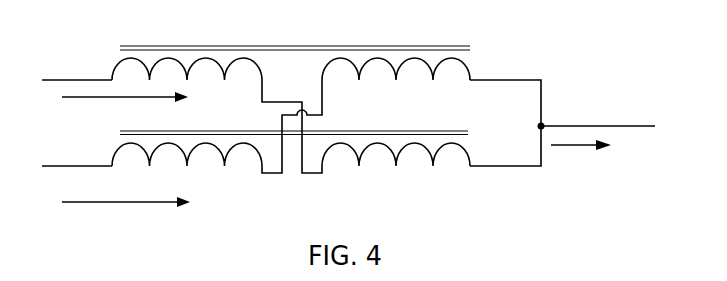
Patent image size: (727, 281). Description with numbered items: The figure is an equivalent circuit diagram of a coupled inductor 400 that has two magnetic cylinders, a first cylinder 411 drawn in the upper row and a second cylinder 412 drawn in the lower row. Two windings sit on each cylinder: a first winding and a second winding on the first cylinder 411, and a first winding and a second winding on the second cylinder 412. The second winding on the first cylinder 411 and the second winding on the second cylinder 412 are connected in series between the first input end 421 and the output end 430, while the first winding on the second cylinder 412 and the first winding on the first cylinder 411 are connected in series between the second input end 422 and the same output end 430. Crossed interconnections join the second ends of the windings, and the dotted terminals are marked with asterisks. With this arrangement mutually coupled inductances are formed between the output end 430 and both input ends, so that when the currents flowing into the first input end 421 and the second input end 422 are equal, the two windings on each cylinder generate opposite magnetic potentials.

The coupled inductor 400 is at (348, 114).
The first cylinder 411 is at (320, 49).
The second cylinder 412 is at (319, 129).
The first input end 421 is at (115, 64).
The second input end 422 is at (116, 160).
The output end 430 is at (597, 129).